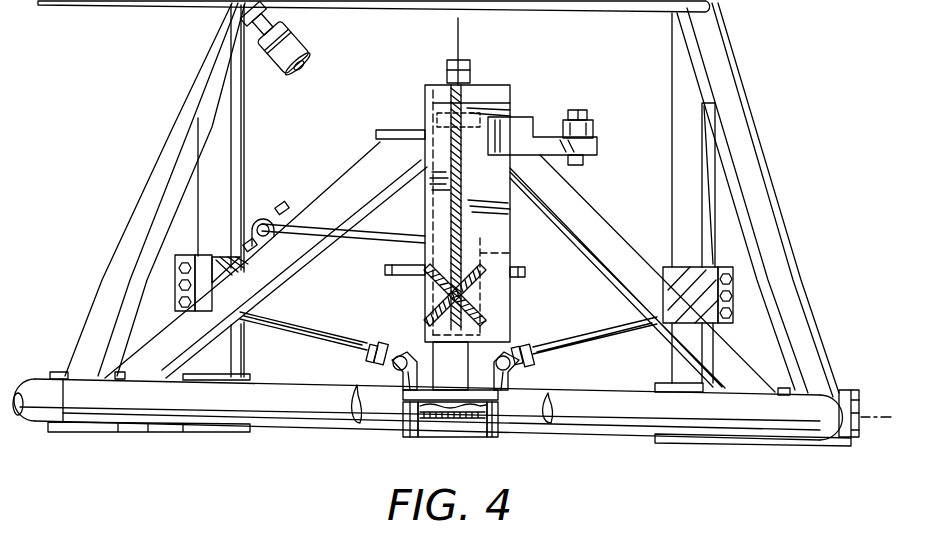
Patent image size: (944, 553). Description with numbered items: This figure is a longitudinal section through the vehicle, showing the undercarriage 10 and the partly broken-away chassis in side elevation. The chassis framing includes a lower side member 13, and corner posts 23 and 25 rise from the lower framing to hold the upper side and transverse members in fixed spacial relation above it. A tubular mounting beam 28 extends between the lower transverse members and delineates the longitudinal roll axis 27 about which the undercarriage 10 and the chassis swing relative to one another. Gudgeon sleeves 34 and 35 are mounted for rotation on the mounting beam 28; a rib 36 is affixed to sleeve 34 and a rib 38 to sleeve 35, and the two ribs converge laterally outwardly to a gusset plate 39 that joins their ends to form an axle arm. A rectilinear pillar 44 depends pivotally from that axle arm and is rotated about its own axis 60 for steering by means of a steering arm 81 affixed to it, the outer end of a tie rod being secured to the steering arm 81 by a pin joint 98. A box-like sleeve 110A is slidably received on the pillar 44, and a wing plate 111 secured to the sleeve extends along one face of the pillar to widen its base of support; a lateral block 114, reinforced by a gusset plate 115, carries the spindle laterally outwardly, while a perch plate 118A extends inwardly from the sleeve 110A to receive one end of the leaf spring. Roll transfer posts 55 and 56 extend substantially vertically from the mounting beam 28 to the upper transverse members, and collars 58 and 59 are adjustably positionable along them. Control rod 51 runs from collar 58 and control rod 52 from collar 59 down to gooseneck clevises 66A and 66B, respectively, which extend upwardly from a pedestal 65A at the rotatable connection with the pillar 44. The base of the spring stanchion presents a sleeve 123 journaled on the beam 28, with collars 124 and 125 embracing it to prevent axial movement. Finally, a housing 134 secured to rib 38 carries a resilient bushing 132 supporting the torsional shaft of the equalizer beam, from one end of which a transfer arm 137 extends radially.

The undercarriage 10 is at (648, 85).
The lower side member 13 is at (764, 417).
The corner post 23 is at (768, 187).
The corner post 25 is at (143, 198).
The roll axis 27 is at (874, 415).
The mounting beam 28 is at (531, 415).
The sleeve 34 is at (733, 428).
The sleeve 35 is at (147, 433).
The rib 36 is at (642, 273).
The rib 38 is at (266, 260).
The gusset plate 39 is at (399, 129).
The pillar 44 is at (440, 348).
The control rod 51 is at (618, 327).
The control rod 52 is at (313, 328).
The roll transfer post 55 is at (700, 160).
The roll transfer post 56 is at (216, 117).
The collar 58 is at (702, 263).
The collar 59 is at (203, 256).
The axis 60 is at (462, 28).
The pedestal 65A is at (398, 400).
The gooseneck clevis 66A is at (500, 378).
The gooseneck clevis 66B is at (402, 375).
The steering arm 81 is at (557, 143).
The pin joint 98 is at (577, 110).
The box-like sleeve 110A is at (514, 255).
The wing plate 111 is at (500, 233).
The lateral block 114 is at (476, 308).
The gusset plate 115 is at (456, 188).
The perch plate 118A is at (526, 273).
The sleeve 123 is at (443, 427).
The collar 124 is at (408, 433).
The collar 125 is at (493, 433).
The resilient bushing 132 is at (262, 243).
The housing 134 is at (262, 217).
The transfer arm 137 is at (368, 233).